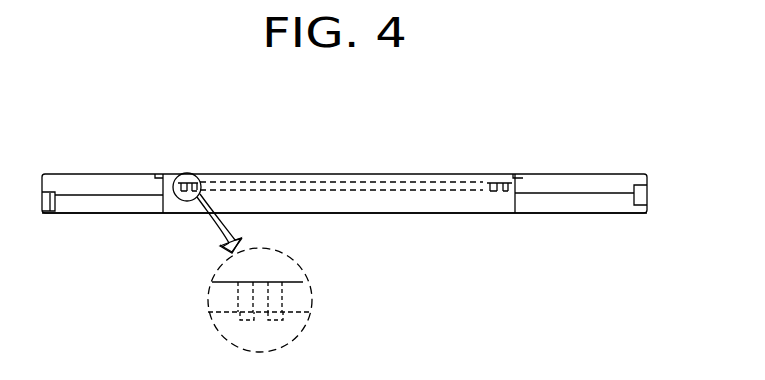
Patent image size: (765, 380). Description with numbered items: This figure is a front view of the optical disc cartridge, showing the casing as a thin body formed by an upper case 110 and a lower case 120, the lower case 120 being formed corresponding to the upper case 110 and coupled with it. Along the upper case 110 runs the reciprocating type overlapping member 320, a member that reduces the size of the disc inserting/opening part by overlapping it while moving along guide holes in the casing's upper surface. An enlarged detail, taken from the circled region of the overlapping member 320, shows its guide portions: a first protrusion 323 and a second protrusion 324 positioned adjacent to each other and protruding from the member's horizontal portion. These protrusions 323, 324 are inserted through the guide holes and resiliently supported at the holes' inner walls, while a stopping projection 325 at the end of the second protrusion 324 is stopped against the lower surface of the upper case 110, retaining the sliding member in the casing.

The upper case 110 is at (115, 175).
The lower case 120 is at (85, 215).
The reciprocating type overlapping member 320 is at (422, 175).
The first protrusion 323 is at (280, 298).
The second protrusion 324 is at (255, 316).
The stopping projection 325 is at (238, 313).